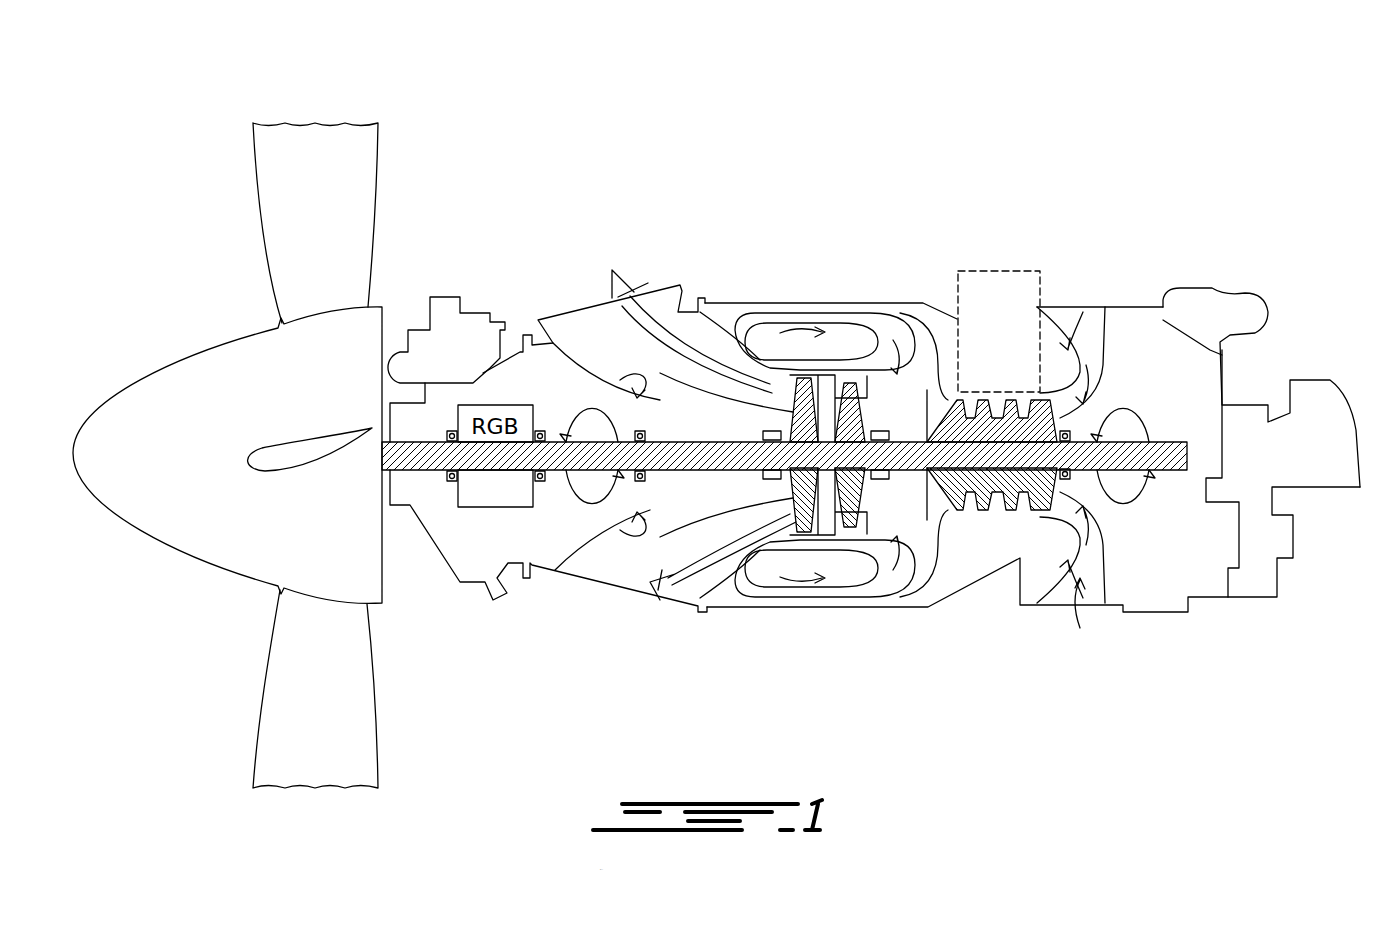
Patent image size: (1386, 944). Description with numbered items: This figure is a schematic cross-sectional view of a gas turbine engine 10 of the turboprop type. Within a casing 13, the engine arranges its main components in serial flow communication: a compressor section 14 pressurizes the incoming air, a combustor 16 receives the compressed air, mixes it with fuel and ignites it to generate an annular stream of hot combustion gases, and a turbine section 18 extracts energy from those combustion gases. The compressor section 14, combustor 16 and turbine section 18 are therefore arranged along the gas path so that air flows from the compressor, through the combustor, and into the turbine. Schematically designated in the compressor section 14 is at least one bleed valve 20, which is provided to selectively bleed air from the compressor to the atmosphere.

The gas turbine engine 10 is at (1013, 148).
The casing 13 is at (906, 303).
The compressor section 14 is at (1013, 510).
The combustor 16 is at (842, 335).
The turbine section 18 is at (787, 508).
The bleed valve 20 is at (1025, 271).